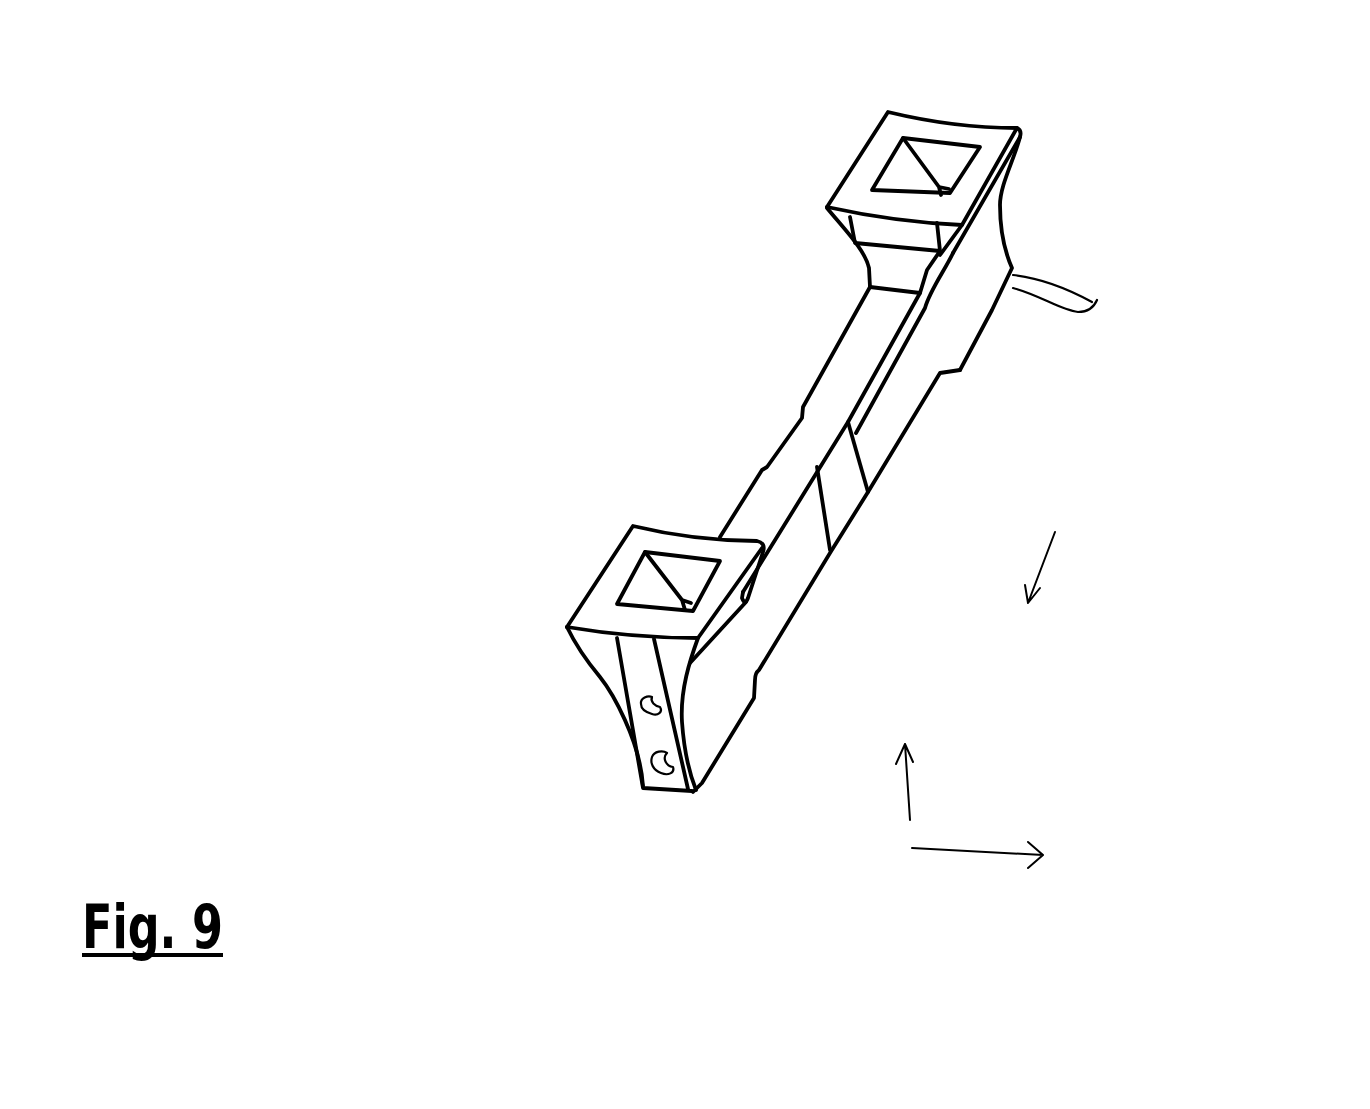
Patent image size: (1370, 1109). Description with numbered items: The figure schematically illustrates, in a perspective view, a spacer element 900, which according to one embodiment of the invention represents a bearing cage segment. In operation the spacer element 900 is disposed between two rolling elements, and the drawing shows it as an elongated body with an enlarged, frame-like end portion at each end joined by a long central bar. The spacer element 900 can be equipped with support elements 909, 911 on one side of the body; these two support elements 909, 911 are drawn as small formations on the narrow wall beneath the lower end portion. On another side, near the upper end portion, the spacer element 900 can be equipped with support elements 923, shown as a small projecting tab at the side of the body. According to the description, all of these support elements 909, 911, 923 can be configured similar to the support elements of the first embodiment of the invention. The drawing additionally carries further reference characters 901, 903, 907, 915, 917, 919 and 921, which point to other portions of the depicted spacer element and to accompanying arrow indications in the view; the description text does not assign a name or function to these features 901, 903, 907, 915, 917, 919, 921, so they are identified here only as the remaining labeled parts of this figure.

The spacer element 900 is at (1323, 172).
The body portion 901 is at (985, 280).
The insertion direction 903 is at (1040, 572).
The side wall 907 is at (787, 445).
The support element 909 is at (640, 713).
The support element 911 is at (643, 778).
The first direction 915 is at (908, 785).
The second direction 917 is at (972, 849).
The front wall 919 is at (645, 678).
The head portion 921 is at (1002, 212).
The support elements 923 is at (1097, 302).